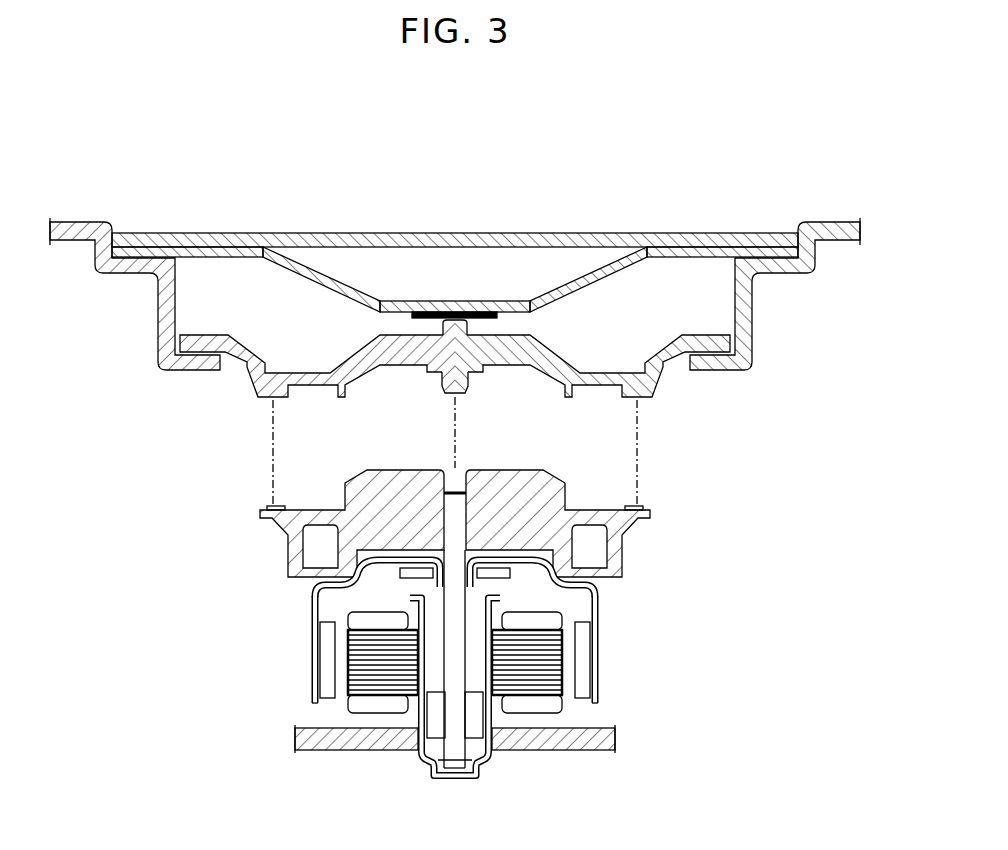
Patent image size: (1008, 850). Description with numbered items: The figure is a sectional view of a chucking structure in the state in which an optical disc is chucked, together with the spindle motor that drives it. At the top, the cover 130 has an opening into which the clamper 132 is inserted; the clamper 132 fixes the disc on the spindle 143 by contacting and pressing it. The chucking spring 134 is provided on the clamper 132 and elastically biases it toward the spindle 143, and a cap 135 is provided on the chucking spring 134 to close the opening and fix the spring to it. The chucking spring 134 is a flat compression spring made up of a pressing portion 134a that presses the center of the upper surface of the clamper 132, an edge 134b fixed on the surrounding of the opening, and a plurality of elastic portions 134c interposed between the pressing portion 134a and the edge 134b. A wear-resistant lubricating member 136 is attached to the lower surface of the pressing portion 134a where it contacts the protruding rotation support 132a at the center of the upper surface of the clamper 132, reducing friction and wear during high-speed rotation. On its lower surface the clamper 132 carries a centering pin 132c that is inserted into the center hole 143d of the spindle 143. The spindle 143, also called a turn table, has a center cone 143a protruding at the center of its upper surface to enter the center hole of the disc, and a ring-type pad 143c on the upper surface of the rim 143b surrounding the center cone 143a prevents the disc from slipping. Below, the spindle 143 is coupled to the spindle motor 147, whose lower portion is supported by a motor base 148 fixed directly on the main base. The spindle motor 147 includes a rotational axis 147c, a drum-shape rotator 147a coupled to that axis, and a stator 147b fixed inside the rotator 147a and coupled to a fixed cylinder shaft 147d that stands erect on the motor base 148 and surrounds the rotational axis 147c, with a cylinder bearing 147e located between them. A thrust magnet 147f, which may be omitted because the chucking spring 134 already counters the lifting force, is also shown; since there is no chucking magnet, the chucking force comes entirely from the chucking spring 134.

The cover 130 is at (74, 221).
The clamper 132 is at (466, 371).
The protruding rotation support 132a is at (467, 323).
The centering pin 132c is at (447, 388).
The chucking spring 134 is at (455, 252).
The pressing portion 134a is at (455, 300).
The edge 134b is at (168, 247).
The elastic portions 134c is at (326, 277).
The cap 135 is at (616, 240).
The wear-resistant lubricating member 136 is at (496, 317).
The spindle 143 is at (508, 503).
The center cone 143a is at (547, 482).
The rim 143b is at (617, 558).
The ring-type pad 143c is at (644, 506).
The center hole 143d is at (452, 480).
The spindle motor 147 is at (508, 692).
The drum-shape rotator 147a is at (594, 693).
The stator 147b is at (561, 643).
The rotational axis 147c is at (454, 766).
The fixed cylinder shaft 147d is at (423, 762).
The cylinder bearing 147e is at (474, 722).
The thrust magnet 147f is at (400, 577).
The motor base 148 is at (331, 748).